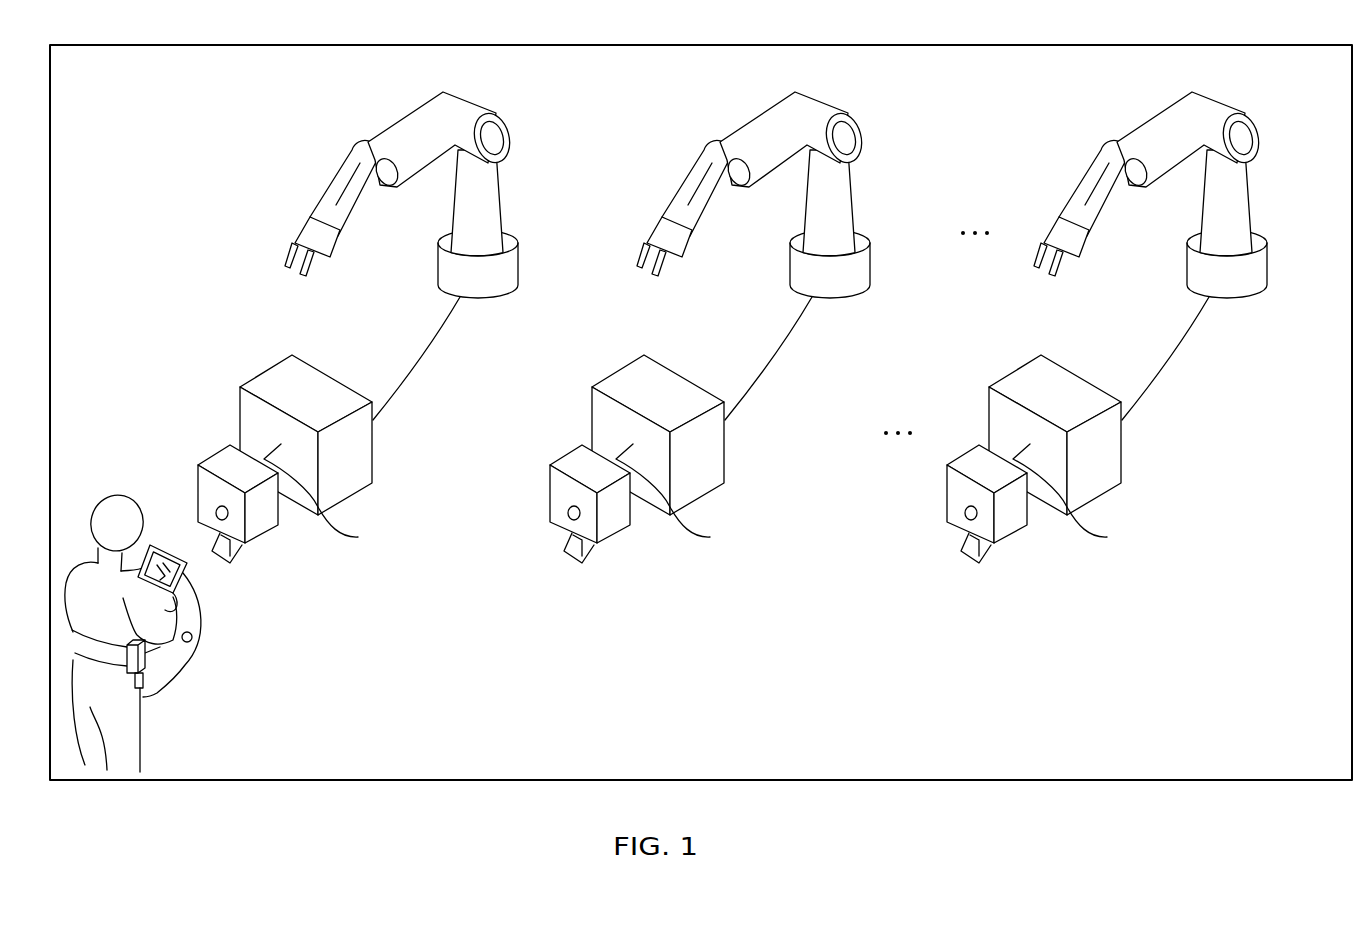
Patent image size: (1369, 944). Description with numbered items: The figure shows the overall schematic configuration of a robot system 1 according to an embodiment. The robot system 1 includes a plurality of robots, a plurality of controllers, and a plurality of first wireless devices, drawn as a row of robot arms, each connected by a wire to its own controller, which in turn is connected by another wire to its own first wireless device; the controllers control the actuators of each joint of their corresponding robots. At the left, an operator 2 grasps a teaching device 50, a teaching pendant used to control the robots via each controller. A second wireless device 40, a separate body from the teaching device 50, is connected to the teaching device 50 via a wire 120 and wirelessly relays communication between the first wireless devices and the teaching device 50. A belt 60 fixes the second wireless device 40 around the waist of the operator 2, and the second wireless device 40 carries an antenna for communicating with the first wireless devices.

The robot system 1 is at (798, 797).
The operator 2 is at (126, 461).
The second wireless device 40 is at (150, 663).
The teaching device 50 is at (160, 548).
The belt 60 is at (105, 673).
The wire 120 is at (193, 638).